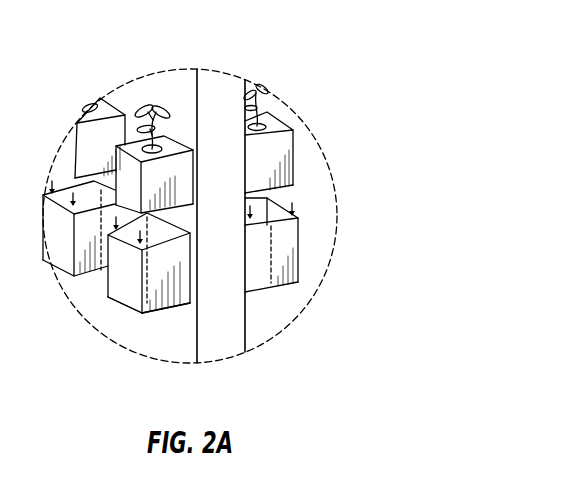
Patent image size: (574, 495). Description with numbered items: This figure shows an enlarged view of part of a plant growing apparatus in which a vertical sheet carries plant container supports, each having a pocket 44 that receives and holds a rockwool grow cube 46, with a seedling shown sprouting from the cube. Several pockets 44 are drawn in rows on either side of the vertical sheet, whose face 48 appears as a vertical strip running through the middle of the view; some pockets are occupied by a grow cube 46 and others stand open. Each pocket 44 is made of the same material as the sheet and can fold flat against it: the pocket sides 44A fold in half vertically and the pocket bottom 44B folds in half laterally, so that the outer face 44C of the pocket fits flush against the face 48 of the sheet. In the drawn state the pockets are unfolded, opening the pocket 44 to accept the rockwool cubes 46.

The face 48 is at (178, 94).
The rockwool grow cube 46 is at (175, 178).
The pocket 44 is at (153, 302).
The pocket sides 44A is at (185, 270).
The pocket bottom 44B is at (162, 321).
The outer face 44C is at (122, 272).